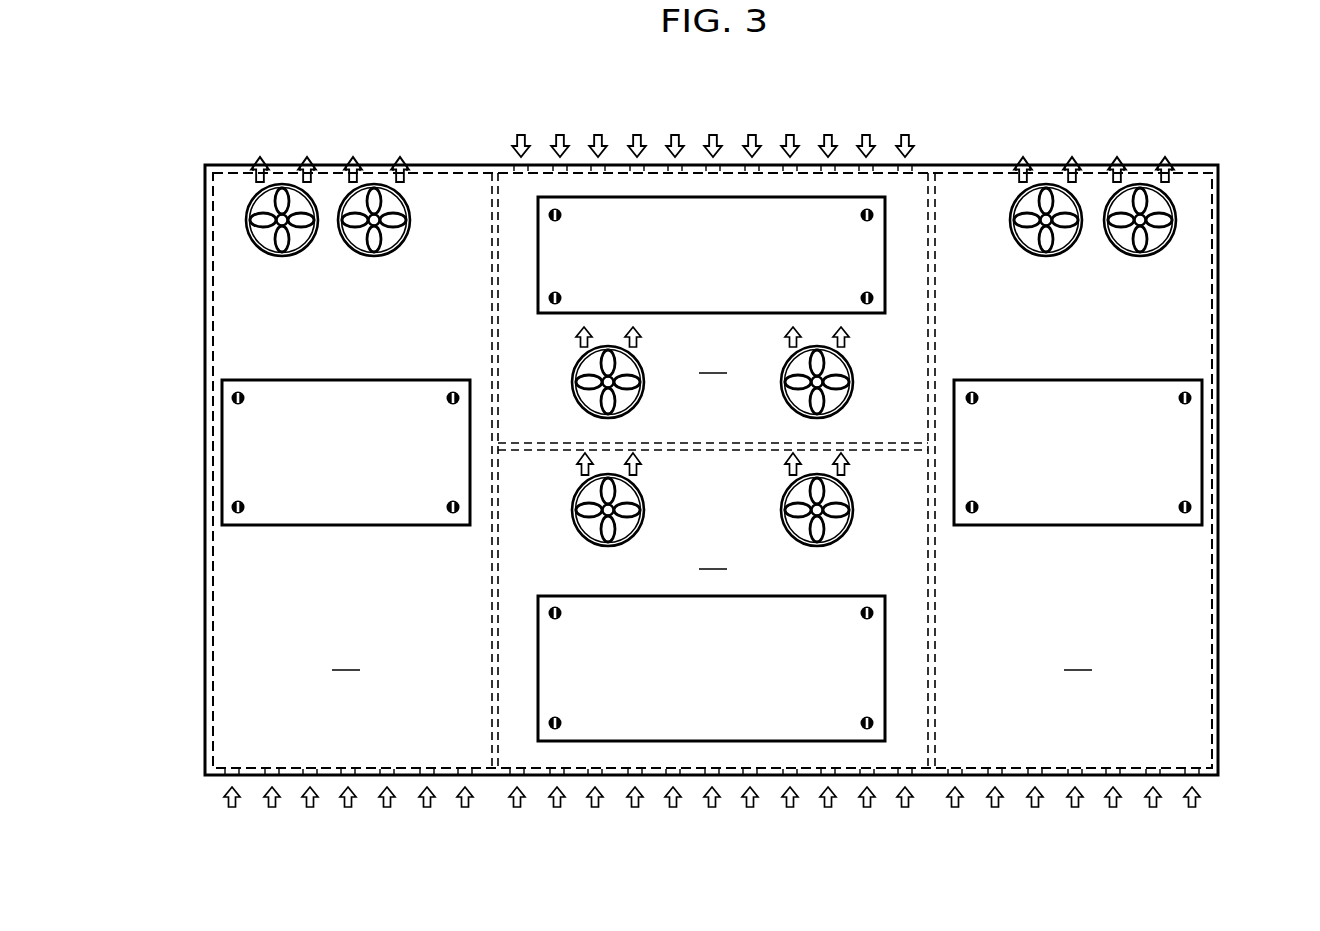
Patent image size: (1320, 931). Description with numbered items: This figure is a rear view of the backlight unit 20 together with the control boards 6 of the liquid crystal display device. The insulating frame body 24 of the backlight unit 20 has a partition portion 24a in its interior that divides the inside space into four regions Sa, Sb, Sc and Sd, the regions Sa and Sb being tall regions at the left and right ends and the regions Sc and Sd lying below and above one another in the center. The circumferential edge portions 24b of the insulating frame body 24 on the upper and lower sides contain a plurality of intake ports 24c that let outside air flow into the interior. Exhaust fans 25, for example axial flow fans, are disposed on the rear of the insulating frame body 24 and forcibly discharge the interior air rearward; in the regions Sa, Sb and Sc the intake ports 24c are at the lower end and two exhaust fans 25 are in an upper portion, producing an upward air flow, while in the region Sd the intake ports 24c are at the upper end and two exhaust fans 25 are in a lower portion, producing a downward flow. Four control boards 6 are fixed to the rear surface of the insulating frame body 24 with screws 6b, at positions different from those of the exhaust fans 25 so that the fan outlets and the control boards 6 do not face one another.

The backlight unit 20 is at (165, 112).
The insulating frame body 24 is at (200, 238).
The partition portion 24a is at (491, 670).
The circumferential edge portions 24b is at (212, 624).
The intake ports 24c is at (570, 170).
The exhaust fans 25 is at (277, 257).
The control boards 6 is at (346, 380).
The screw 6b is at (238, 391).